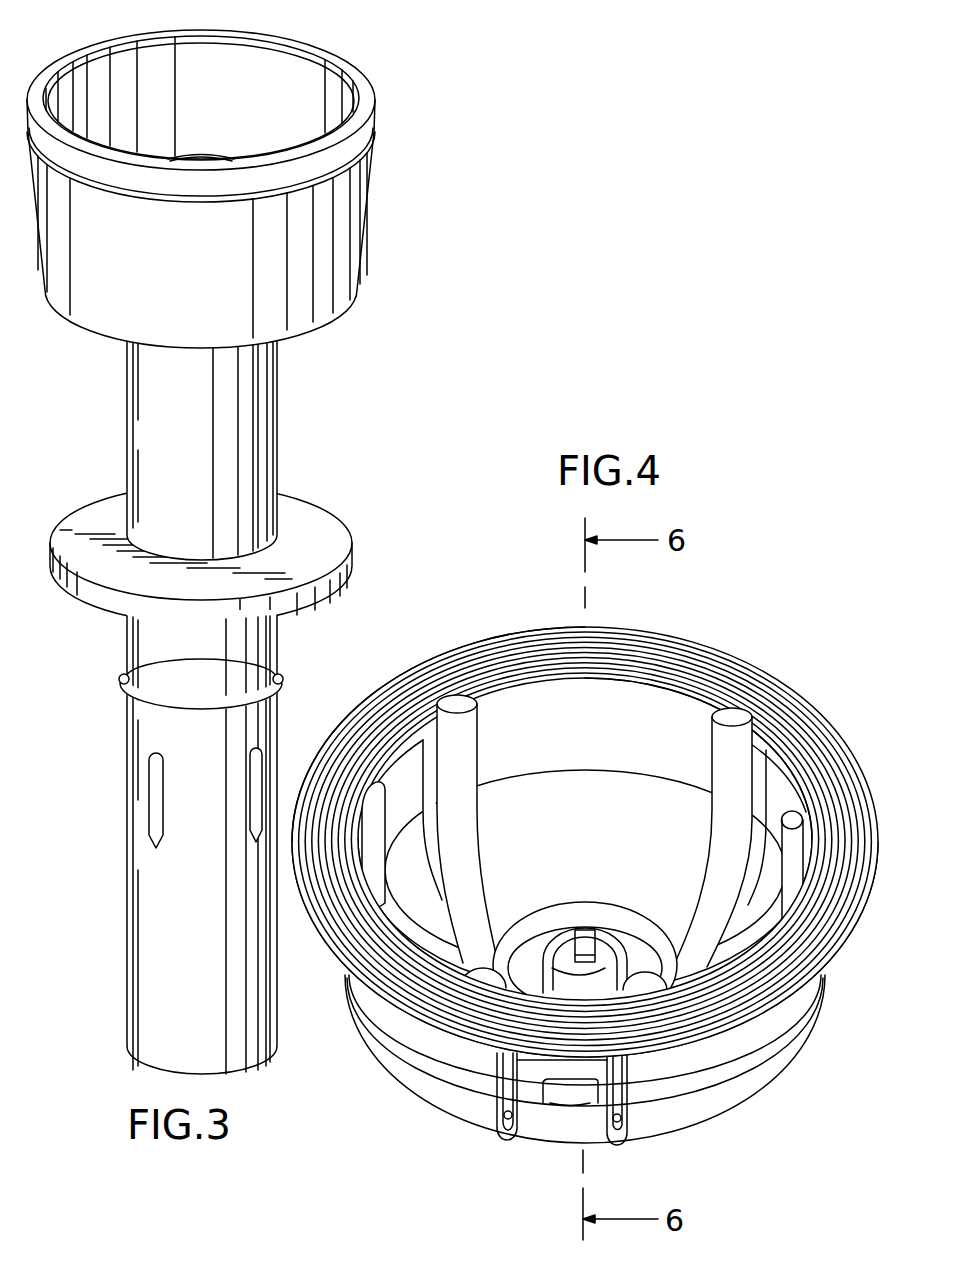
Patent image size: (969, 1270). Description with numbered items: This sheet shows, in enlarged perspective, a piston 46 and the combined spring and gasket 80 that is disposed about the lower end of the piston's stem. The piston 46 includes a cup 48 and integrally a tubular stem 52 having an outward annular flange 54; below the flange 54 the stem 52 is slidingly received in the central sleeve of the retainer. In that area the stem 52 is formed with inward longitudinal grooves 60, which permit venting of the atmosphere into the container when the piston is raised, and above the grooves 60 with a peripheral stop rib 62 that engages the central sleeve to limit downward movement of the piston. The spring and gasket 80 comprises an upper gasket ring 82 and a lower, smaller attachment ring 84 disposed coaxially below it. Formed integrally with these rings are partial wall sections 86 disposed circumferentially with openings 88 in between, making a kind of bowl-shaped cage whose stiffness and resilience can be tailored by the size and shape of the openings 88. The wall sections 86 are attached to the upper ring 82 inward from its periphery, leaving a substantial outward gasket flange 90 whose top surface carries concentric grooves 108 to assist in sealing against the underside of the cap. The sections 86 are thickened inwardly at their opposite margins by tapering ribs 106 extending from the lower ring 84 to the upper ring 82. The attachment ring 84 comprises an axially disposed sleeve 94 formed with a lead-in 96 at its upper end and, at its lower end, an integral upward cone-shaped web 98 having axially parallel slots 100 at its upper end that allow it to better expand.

In FIG. 3, the piston 46 is at (128, 879).
In FIG. 3, the cup 48 is at (368, 225).
In FIG. 3, the tubular stem 52 is at (128, 739).
In FIG. 3, the annular flange 54 is at (313, 522).
In FIG. 3, the longitudinal grooves 60 is at (148, 802).
In FIG. 3, the stop rib 62 is at (276, 677).
In FIG. 4, the combined spring and gasket 80 is at (840, 982).
In FIG. 4, the upper gasket ring 82 is at (692, 661).
In FIG. 4, the lower attachment ring 84 is at (585, 926).
In FIG. 4, the partial wall sections 86 is at (618, 729).
In FIG. 4, the openings 88 is at (398, 777).
In FIG. 4, the gasket flange 90 is at (818, 718).
In FIG. 4, the sleeve 94 is at (610, 912).
In FIG. 4, the lead-in 96 is at (540, 930).
In FIG. 4, the cone-shaped web 98 is at (617, 946).
In FIG. 4, the slots 100 is at (582, 942).
In FIG. 4, the ribs 106 is at (462, 741).
In FIG. 4, the concentric grooves 108 is at (762, 700).